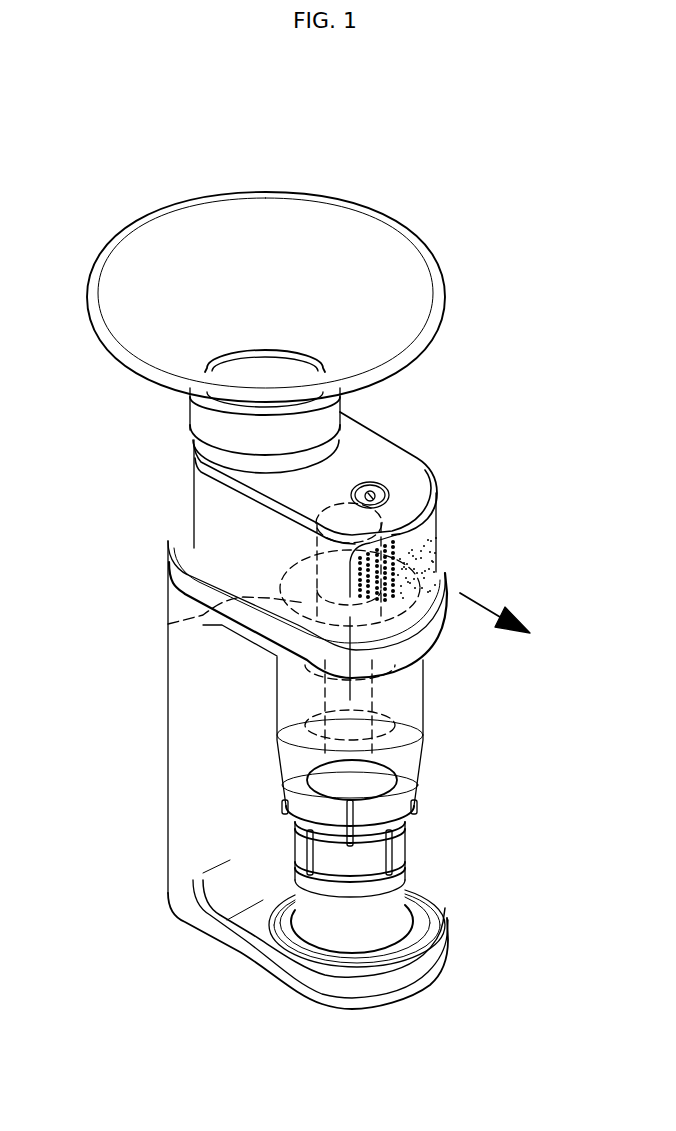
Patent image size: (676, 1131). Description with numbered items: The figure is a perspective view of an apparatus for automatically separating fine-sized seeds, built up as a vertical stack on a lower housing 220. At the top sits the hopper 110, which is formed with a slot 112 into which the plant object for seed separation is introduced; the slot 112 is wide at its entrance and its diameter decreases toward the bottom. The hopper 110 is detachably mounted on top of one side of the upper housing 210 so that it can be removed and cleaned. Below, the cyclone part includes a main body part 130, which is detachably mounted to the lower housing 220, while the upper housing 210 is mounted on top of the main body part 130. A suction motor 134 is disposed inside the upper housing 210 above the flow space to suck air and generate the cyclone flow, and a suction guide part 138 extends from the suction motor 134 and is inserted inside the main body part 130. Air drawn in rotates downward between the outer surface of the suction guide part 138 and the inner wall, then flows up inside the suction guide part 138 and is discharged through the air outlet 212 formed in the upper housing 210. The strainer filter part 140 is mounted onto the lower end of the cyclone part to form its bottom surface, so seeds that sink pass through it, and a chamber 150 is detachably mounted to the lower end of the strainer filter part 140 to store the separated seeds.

The hopper 110 is at (440, 295).
The slot 112 is at (272, 368).
The upper housing 210 is at (217, 515).
The air outlet 212 is at (433, 537).
The suction motor 134 is at (168, 624).
The main body part 130 is at (417, 691).
The suction guide part 138 is at (383, 727).
The lower housing 220 is at (178, 765).
The strainer filter part 140 is at (398, 840).
The chamber 150 is at (398, 868).